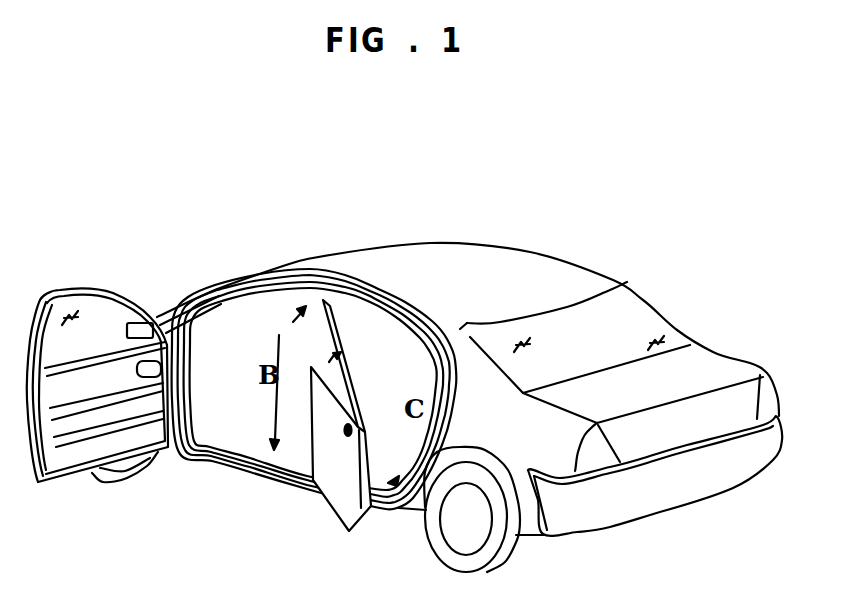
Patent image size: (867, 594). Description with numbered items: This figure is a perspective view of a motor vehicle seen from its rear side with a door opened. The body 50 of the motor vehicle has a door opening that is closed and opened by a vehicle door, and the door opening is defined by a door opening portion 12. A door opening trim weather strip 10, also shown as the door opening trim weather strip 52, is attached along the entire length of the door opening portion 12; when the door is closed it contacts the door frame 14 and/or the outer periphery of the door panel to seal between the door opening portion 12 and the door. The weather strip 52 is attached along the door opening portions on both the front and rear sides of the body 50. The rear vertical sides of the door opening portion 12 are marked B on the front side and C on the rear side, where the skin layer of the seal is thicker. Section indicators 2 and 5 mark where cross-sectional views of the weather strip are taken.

The door opening trim weather strip 10 is at (283, 297).
The door opening portion 12 is at (203, 285).
The door frame 14 is at (87, 289).
The body 50 is at (547, 268).
The door opening trim weather strip 52 is at (314, 329).
The section line 2- 2 is at (261, 327).
The section line 5- 5 is at (431, 345).